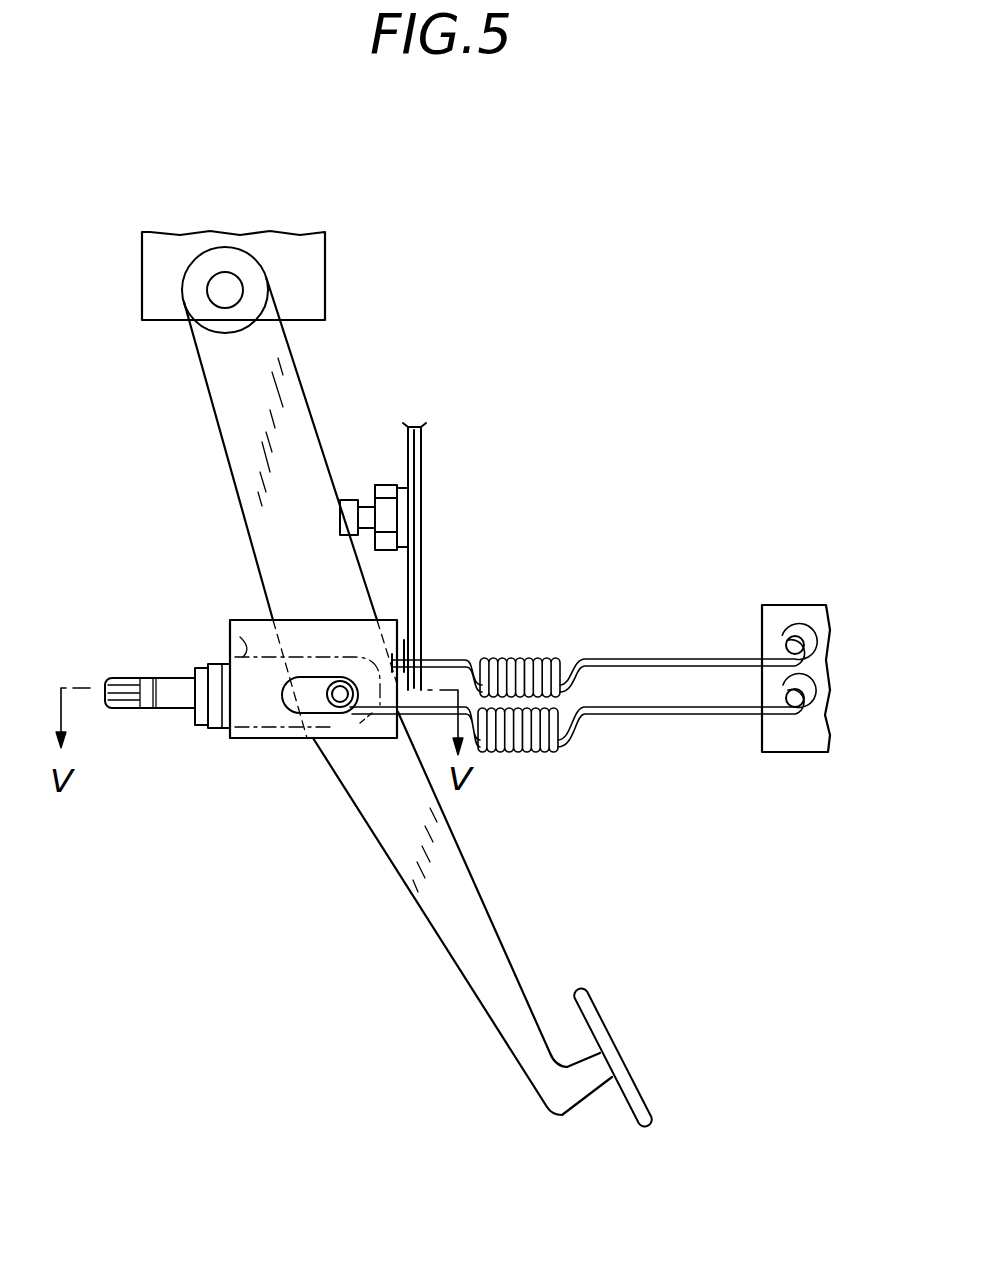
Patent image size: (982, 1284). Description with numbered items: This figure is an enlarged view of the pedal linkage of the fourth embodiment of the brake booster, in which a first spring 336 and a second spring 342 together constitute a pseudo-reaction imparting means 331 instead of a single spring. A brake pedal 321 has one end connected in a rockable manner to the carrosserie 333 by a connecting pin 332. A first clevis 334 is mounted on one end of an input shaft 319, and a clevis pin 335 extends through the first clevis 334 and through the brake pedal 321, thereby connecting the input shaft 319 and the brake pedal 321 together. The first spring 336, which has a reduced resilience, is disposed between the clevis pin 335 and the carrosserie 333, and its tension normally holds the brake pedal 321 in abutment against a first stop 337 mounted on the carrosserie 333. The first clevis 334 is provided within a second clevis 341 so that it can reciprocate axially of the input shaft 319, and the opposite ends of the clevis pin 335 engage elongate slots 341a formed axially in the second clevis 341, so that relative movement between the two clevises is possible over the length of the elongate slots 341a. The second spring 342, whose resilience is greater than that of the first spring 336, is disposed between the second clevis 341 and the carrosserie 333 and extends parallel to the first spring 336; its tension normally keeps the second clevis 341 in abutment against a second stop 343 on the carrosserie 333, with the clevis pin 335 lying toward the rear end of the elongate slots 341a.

The input shaft 319 is at (167, 692).
The brake pedal 321 is at (488, 937).
The pseudo-reaction imparting means 331 is at (257, 731).
The connecting pin 332 is at (222, 284).
The carrosserie 333 is at (308, 244).
The first clevis 334 is at (226, 633).
The clevis pin 335 is at (346, 705).
The first spring 336 is at (508, 754).
The first stop 337 is at (350, 508).
The second clevis 341 is at (248, 620).
The elongate slots 341a is at (300, 693).
The second spring 342 is at (533, 658).
The second stop 343 is at (415, 612).